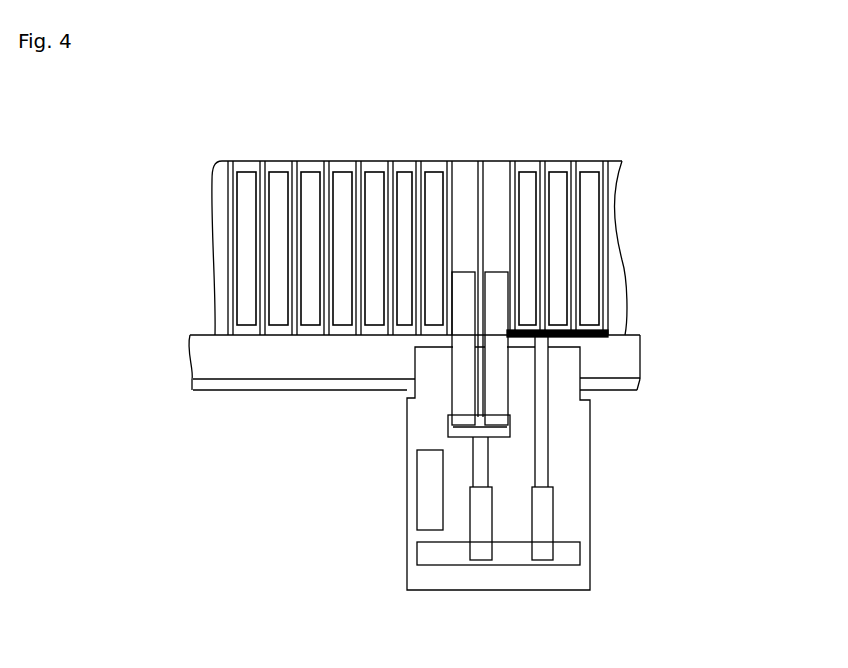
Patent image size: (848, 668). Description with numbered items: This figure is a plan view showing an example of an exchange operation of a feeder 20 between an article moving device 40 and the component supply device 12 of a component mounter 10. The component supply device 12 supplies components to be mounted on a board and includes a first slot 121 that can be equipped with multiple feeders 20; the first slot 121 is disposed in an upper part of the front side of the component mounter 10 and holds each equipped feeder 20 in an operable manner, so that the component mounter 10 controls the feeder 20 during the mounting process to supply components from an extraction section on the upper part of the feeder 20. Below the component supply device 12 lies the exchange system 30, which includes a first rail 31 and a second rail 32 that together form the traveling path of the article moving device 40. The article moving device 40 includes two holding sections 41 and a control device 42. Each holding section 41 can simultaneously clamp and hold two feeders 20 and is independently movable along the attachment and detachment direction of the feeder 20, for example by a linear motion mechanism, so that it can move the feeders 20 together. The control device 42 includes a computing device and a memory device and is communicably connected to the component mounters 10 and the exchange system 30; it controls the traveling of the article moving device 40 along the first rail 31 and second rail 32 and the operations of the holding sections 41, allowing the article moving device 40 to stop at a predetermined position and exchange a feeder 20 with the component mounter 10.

The component mounter 10 is at (198, 115).
The component supply device 12 is at (274, 158).
The first slot 121 is at (470, 167).
The feeder 20 is at (374, 180).
The exchange system 30 is at (385, 437).
The first rail 31 is at (208, 361).
The second rail 32 is at (212, 385).
The article moving device 40 is at (389, 547).
The holding section 41 is at (605, 334).
The control device 42 is at (433, 487).